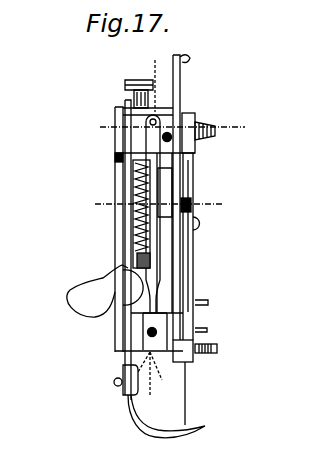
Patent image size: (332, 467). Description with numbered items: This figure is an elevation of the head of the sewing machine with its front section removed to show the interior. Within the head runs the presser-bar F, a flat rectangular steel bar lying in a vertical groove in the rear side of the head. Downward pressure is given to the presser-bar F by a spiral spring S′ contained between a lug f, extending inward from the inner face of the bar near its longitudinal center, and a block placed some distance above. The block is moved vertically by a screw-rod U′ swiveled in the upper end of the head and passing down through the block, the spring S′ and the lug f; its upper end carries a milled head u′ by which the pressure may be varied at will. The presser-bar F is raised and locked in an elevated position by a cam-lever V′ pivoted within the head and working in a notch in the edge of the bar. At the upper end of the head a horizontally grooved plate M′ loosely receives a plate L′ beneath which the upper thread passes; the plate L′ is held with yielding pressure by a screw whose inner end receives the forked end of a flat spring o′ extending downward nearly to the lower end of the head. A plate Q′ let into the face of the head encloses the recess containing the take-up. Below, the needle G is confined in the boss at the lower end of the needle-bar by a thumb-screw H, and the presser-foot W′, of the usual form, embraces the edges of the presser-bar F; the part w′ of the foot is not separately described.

The presser-bar F is at (180, 88).
The flat spring o′ is at (159, 286).
The spiral spring S′ is at (135, 223).
The lug f is at (137, 260).
The plate Q′ is at (193, 266).
The horizontally-grooved plate M′ is at (190, 110).
The plate L′ is at (205, 137).
The milled head u′ is at (140, 80).
The screw-rod U′ is at (135, 158).
The cam-lever V′ is at (112, 290).
The thumb-screw H is at (217, 348).
The needle G is at (193, 393).
The clamp pin w′ is at (128, 399).
The presser-foot W′ is at (157, 437).